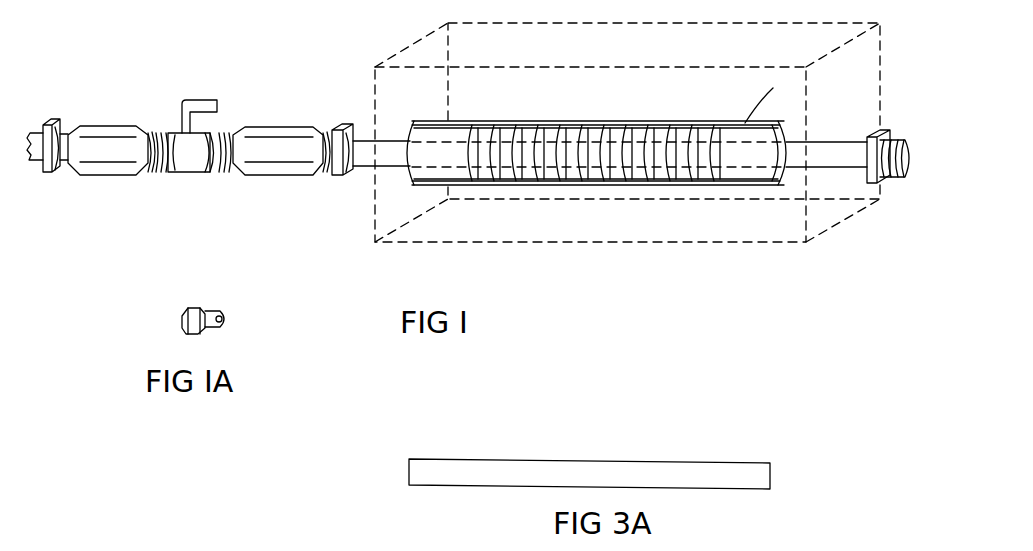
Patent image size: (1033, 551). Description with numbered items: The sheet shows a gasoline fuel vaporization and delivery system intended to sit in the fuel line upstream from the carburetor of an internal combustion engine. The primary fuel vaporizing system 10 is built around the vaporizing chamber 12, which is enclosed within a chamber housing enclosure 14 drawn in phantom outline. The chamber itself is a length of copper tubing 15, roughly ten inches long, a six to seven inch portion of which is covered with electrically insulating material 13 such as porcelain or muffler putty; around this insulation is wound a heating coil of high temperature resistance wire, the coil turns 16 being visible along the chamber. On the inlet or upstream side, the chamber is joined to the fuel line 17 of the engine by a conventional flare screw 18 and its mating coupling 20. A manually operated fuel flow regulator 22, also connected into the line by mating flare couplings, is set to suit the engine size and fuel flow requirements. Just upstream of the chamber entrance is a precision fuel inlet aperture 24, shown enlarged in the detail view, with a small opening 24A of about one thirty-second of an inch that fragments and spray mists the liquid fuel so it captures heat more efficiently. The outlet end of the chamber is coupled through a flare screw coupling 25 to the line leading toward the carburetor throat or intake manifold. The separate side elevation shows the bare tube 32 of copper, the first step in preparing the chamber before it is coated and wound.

In FIG. 1, the primary fuel vaporizing system 10 is at (371, 62).
In FIG. 1, the vaporizing chamber 12 is at (689, 195).
In FIG. 1, the electrically insulating material 13 is at (552, 130).
In FIG. 1, the chamber housing enclosure 14 is at (727, 245).
In FIG. 1, the copper tubing 15 is at (382, 140).
In FIG. 1, the coil windings 16 is at (460, 178).
In FIG. 1, the fuel line 17 is at (36, 132).
In FIG. 1, the flare screw 18 is at (50, 170).
In FIG. 1, the mating coupling 20 is at (108, 127).
In FIG. 1, the manually operated fuel flow regulator 22 is at (182, 158).
In FIG. 1A, the precision fuel inlet aperture 24 is at (190, 305).
In FIG. 1A, the opening 24A is at (224, 320).
In FIG. 1, the flare screw coupling 25 is at (337, 165).
In FIG. 3A, the tube 32 is at (680, 460).